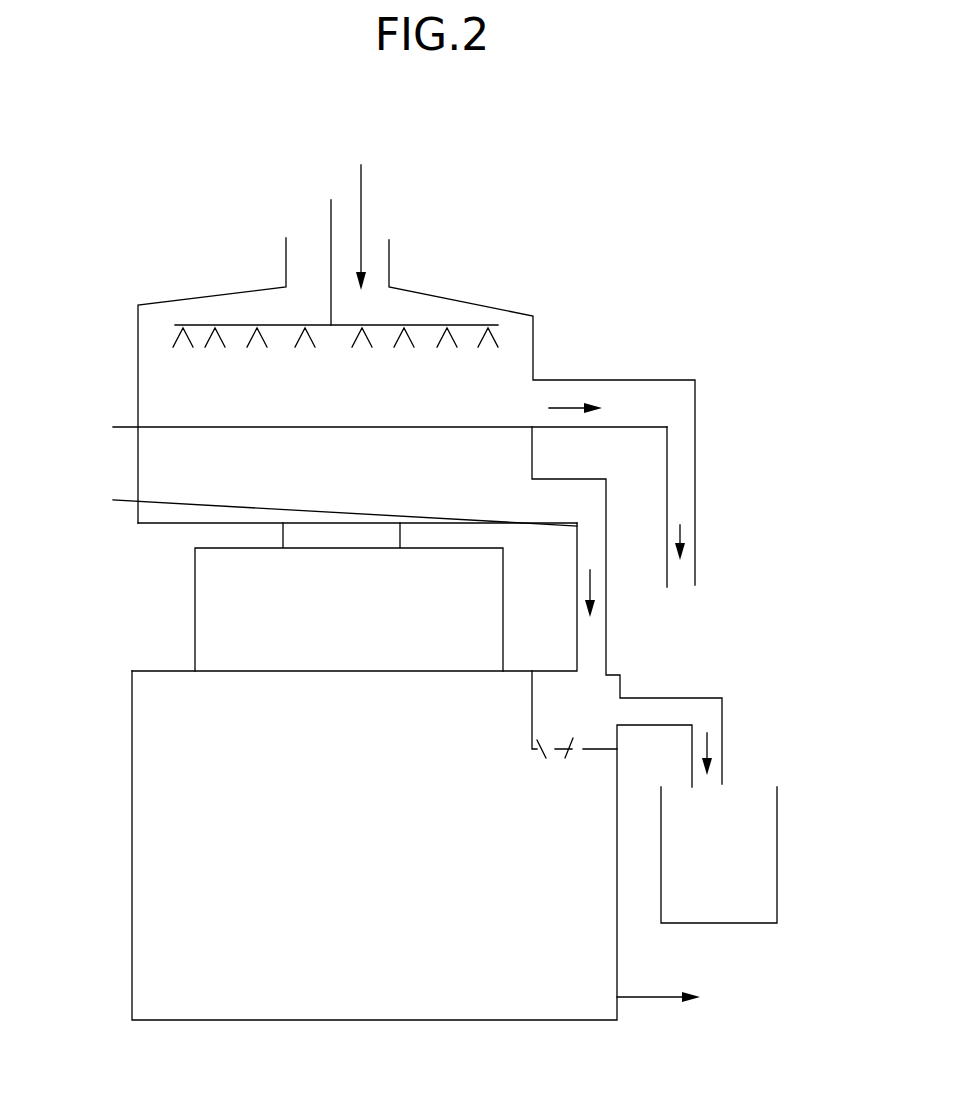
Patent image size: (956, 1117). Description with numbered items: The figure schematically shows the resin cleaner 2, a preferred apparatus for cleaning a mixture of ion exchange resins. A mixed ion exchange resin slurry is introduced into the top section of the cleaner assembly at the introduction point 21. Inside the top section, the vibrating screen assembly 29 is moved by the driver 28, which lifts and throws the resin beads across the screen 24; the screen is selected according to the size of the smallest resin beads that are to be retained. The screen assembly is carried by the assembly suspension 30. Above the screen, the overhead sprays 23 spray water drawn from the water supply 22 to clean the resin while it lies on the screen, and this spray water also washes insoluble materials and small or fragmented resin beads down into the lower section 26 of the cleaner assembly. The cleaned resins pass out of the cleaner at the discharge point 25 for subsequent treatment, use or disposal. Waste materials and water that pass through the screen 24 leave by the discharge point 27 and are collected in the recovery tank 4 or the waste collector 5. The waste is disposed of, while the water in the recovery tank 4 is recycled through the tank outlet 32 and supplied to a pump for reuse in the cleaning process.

The resin cleaner 2 is at (416, 411).
The slurry introduction point 21 is at (378, 214).
The water supply 22 is at (320, 240).
The overhead sprays 23 is at (335, 319).
The screen 24 is at (390, 406).
The discharge point 25 is at (702, 507).
The lower section 26 is at (345, 498).
The discharge point 27 is at (627, 605).
The driver 28 is at (354, 597).
The vibrating screen assembly 29 is at (329, 518).
The assembly suspension 30 is at (349, 597).
The recovery tank 4 is at (412, 845).
The waste collector 5 is at (719, 828).
The tank outlet 32 is at (665, 1020).